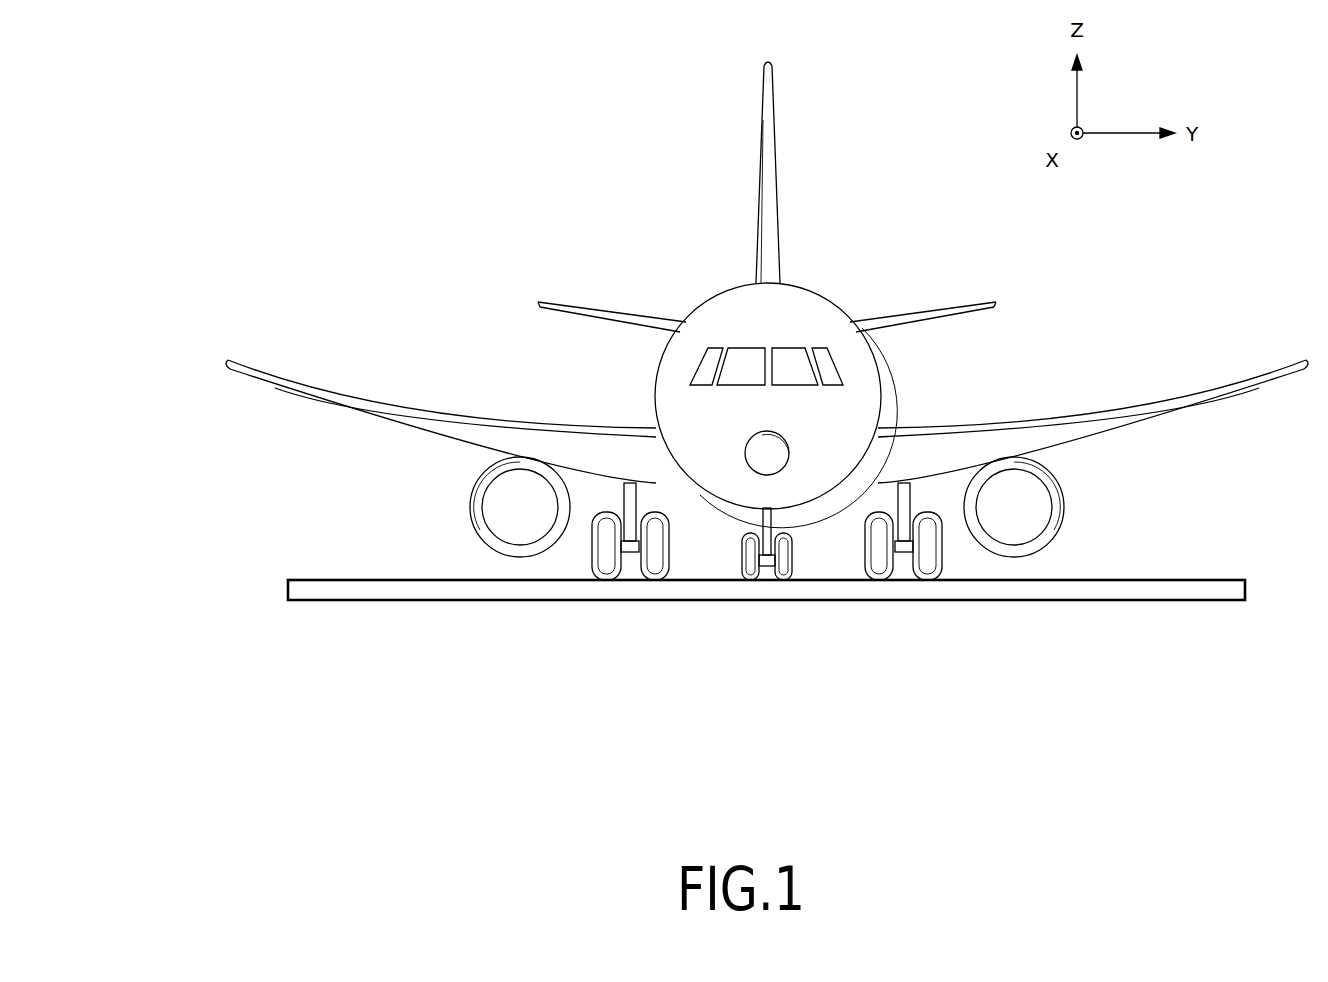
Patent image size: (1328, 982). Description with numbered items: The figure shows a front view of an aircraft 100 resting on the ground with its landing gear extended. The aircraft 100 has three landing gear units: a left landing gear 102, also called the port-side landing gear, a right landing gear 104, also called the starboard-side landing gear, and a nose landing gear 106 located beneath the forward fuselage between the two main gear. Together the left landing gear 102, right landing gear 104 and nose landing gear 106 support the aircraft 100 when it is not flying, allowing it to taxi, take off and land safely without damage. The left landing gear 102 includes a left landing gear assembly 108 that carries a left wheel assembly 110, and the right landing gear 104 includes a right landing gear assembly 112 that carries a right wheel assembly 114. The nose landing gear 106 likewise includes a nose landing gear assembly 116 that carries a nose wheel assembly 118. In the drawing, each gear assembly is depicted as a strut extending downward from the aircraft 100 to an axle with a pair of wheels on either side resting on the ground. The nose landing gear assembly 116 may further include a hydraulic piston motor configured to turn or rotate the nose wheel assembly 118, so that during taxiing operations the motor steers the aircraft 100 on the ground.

The aircraft 100 is at (577, 178).
The left landing gear 102 is at (979, 569).
The right landing gear 104 is at (603, 488).
The nose landing gear 106 is at (719, 572).
The left landing gear assembly 108 is at (898, 498).
The left wheel assembly 110 is at (903, 553).
The right landing gear assembly 112 is at (622, 533).
The right wheel assembly 114 is at (630, 552).
The nose landing gear assembly 116 is at (771, 513).
The nose wheel assembly 118 is at (765, 566).